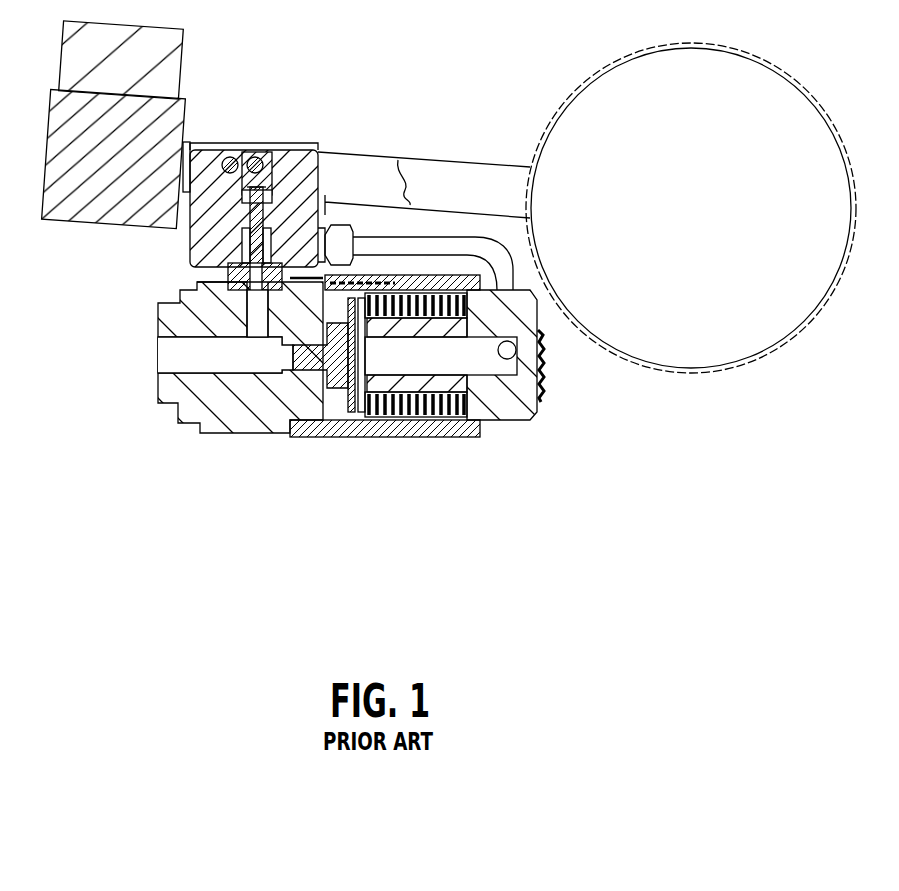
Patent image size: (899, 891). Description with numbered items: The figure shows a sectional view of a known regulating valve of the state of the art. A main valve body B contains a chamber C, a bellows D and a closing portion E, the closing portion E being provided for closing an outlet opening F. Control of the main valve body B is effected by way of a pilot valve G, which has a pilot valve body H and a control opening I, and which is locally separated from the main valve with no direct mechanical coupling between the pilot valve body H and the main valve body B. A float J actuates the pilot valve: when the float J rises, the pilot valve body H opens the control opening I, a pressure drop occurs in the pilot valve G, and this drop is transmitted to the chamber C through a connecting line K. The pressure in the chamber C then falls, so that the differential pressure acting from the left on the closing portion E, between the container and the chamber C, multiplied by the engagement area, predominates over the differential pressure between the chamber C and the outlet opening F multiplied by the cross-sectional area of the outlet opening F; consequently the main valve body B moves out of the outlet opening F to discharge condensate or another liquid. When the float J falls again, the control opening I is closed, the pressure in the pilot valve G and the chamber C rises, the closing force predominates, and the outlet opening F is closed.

The main valve body B is at (502, 407).
The chamber C is at (482, 357).
The bellows D is at (402, 413).
The closing portion E is at (338, 372).
The outlet opening F is at (293, 360).
The pilot valve G is at (323, 192).
The pilot valve body H is at (266, 198).
The control opening I is at (258, 266).
The float J is at (691, 208).
The connecting line K is at (405, 244).